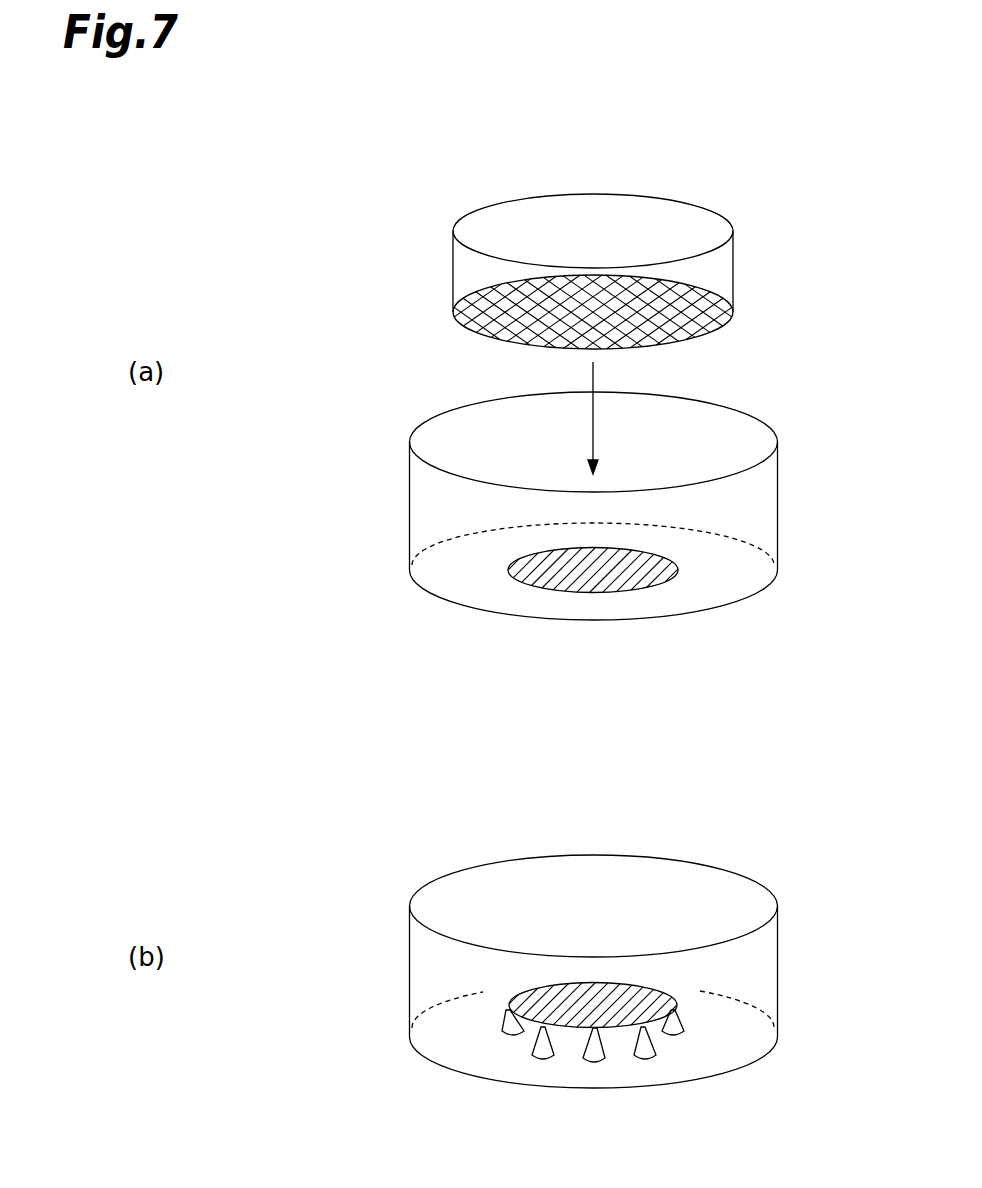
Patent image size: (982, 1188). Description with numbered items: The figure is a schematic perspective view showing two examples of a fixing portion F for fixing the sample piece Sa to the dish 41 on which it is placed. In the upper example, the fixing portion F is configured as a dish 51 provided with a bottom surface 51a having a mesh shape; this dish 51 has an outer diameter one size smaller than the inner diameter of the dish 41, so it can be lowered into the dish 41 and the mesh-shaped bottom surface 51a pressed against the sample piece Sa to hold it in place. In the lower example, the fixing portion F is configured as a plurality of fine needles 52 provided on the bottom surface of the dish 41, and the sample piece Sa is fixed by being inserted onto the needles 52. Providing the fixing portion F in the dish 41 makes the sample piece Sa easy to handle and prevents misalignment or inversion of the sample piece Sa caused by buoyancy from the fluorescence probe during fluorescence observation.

The fixing portion F is at (598, 647).
The dish 51 is at (642, 286).
The bottom surface 51a is at (668, 322).
The dish 41 is at (409, 512).
The sample piece Sa is at (654, 570).
The fine needles 52 is at (532, 1052).